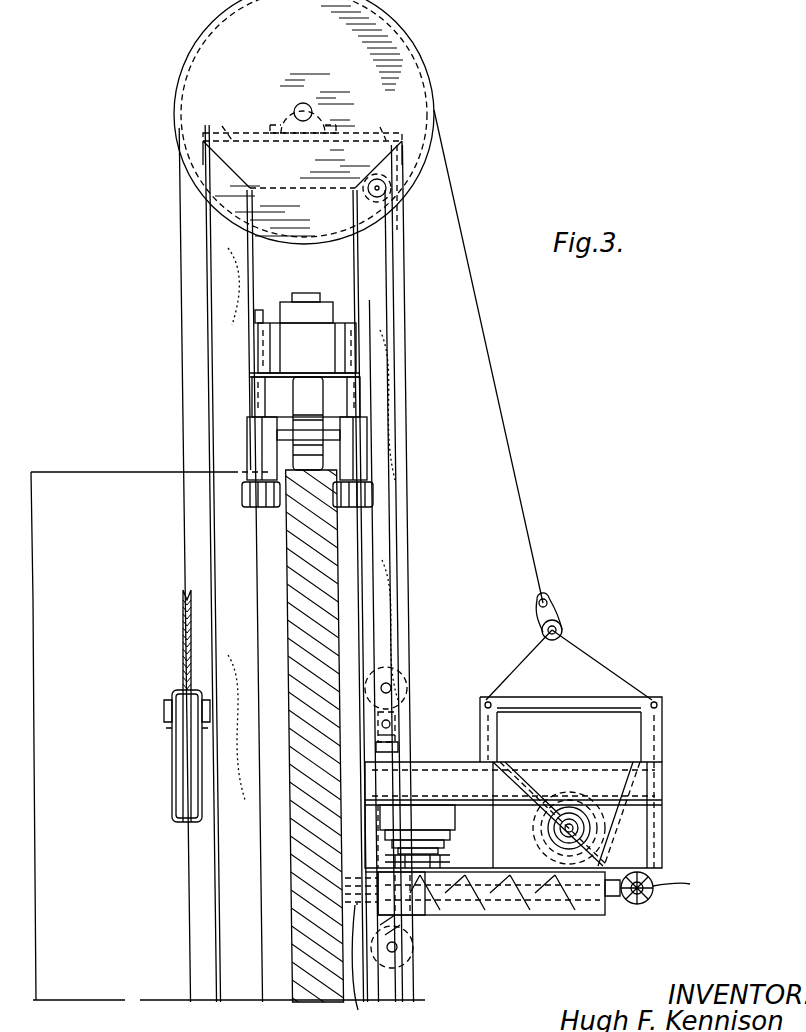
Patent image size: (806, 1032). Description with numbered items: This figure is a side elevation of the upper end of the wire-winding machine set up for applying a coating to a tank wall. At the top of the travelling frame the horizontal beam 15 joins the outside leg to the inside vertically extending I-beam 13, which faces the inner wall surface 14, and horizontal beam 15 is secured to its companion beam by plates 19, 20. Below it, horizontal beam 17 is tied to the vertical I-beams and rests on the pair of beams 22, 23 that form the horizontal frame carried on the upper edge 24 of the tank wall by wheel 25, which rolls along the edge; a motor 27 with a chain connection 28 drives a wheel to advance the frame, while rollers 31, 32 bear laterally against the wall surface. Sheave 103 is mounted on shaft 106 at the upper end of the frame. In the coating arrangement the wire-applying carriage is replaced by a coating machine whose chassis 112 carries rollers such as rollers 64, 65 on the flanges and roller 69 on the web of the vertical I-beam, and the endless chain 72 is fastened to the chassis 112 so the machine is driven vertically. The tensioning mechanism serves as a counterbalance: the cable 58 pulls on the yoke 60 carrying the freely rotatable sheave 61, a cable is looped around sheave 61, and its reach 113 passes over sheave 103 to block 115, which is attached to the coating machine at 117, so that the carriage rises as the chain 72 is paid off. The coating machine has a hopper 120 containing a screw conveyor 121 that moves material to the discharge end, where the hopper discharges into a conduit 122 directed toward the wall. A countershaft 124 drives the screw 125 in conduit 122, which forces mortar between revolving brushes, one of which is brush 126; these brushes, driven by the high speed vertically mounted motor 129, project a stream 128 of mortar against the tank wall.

The sheave 103 is at (178, 72).
The shaft 106 is at (300, 110).
The plate 20 is at (224, 120).
The plate 19 is at (380, 165).
The horizontal beam 15 is at (300, 186).
The motor 27 is at (299, 300).
The chain connection 28 is at (262, 318).
The horizontal beam 17 is at (347, 322).
The beam 23 is at (270, 393).
The beam 22 is at (332, 405).
The upper edge of the tank wall 24 is at (262, 449).
The wheel 25 is at (342, 450).
The roller 32 is at (242, 497).
The roller 31 is at (375, 497).
The I-beam 13 is at (232, 542).
The inner wall surface 14 is at (287, 587).
The reach of the loop 113 is at (183, 353).
The endless chain 72 is at (398, 623).
The roller 65 is at (405, 675).
The chassis 112 is at (398, 715).
The roller 69 is at (378, 744).
The sheave 61 is at (181, 651).
The yoke 60 is at (172, 757).
The cable 58 is at (190, 885).
The block 115 is at (548, 604).
The attachment point 117 is at (482, 698).
The screw conveyor 121 is at (605, 798).
The hopper 120 is at (590, 825).
The high speed motor 129 is at (420, 817).
The conduit 122 is at (525, 910).
The screw 125 is at (588, 910).
The countershaft 124 is at (674, 887).
The revolving brush 126 is at (412, 913).
The roller 64 is at (414, 962).
The stream of plastic material 128 is at (380, 967).